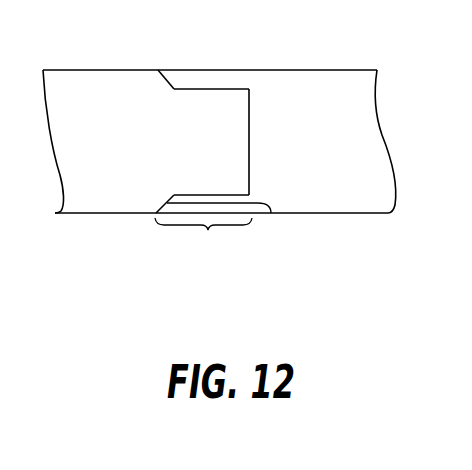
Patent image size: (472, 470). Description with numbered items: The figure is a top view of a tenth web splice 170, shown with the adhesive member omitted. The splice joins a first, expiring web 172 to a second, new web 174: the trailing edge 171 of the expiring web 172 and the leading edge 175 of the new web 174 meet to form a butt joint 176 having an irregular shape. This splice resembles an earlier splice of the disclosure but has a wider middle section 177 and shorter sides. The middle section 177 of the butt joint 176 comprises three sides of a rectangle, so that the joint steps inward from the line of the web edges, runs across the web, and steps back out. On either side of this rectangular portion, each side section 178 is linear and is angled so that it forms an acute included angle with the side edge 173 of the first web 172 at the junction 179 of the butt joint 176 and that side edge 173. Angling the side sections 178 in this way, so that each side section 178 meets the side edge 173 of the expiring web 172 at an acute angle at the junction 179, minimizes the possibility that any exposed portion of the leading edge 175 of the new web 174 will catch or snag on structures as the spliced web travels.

The tenth web splice 170 is at (62, 47).
The trailing edge 171 is at (249, 174).
The first, expiring web 172 is at (348, 199).
The side edge 173 is at (356, 70).
The second, new web 174 is at (87, 200).
The leading edge 175 is at (249, 148).
The butt joint 176 is at (203, 237).
The middle section 177 is at (249, 109).
The side section 178 is at (166, 76).
The junction 179 is at (167, 82).